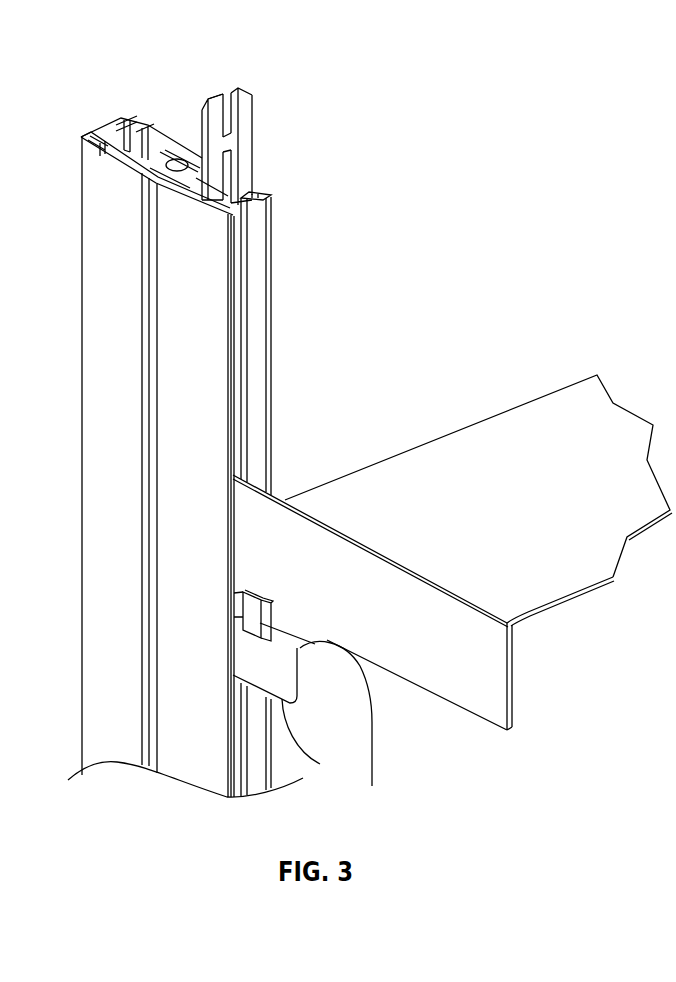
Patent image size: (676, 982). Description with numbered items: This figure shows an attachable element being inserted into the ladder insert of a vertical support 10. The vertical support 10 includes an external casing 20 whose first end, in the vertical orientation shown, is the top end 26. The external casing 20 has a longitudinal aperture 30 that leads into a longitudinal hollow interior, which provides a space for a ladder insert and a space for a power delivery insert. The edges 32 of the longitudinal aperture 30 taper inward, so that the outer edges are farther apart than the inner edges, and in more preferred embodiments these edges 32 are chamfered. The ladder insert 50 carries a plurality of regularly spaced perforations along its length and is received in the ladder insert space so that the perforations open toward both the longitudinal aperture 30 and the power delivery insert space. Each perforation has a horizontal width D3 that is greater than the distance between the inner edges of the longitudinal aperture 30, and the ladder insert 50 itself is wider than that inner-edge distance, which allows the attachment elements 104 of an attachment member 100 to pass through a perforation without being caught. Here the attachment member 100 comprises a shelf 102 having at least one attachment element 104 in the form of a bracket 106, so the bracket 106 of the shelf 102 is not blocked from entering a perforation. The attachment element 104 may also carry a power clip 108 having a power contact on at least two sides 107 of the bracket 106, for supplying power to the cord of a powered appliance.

The vertical support 10 is at (188, 785).
The external casing 20 is at (273, 313).
The top end 26 is at (268, 195).
The longitudinal aperture 30 is at (117, 130).
The edges 32 is at (110, 122).
The ladder insert 50 is at (253, 122).
The horizontal width of the perforations D3 is at (221, 91).
The attachment member 100 is at (423, 441).
The shelf 102 is at (565, 586).
The attachment element 104 is at (495, 707).
The bracket 106 is at (296, 688).
The sides of the bracket 107 is at (318, 762).
The power clip 108 is at (371, 765).